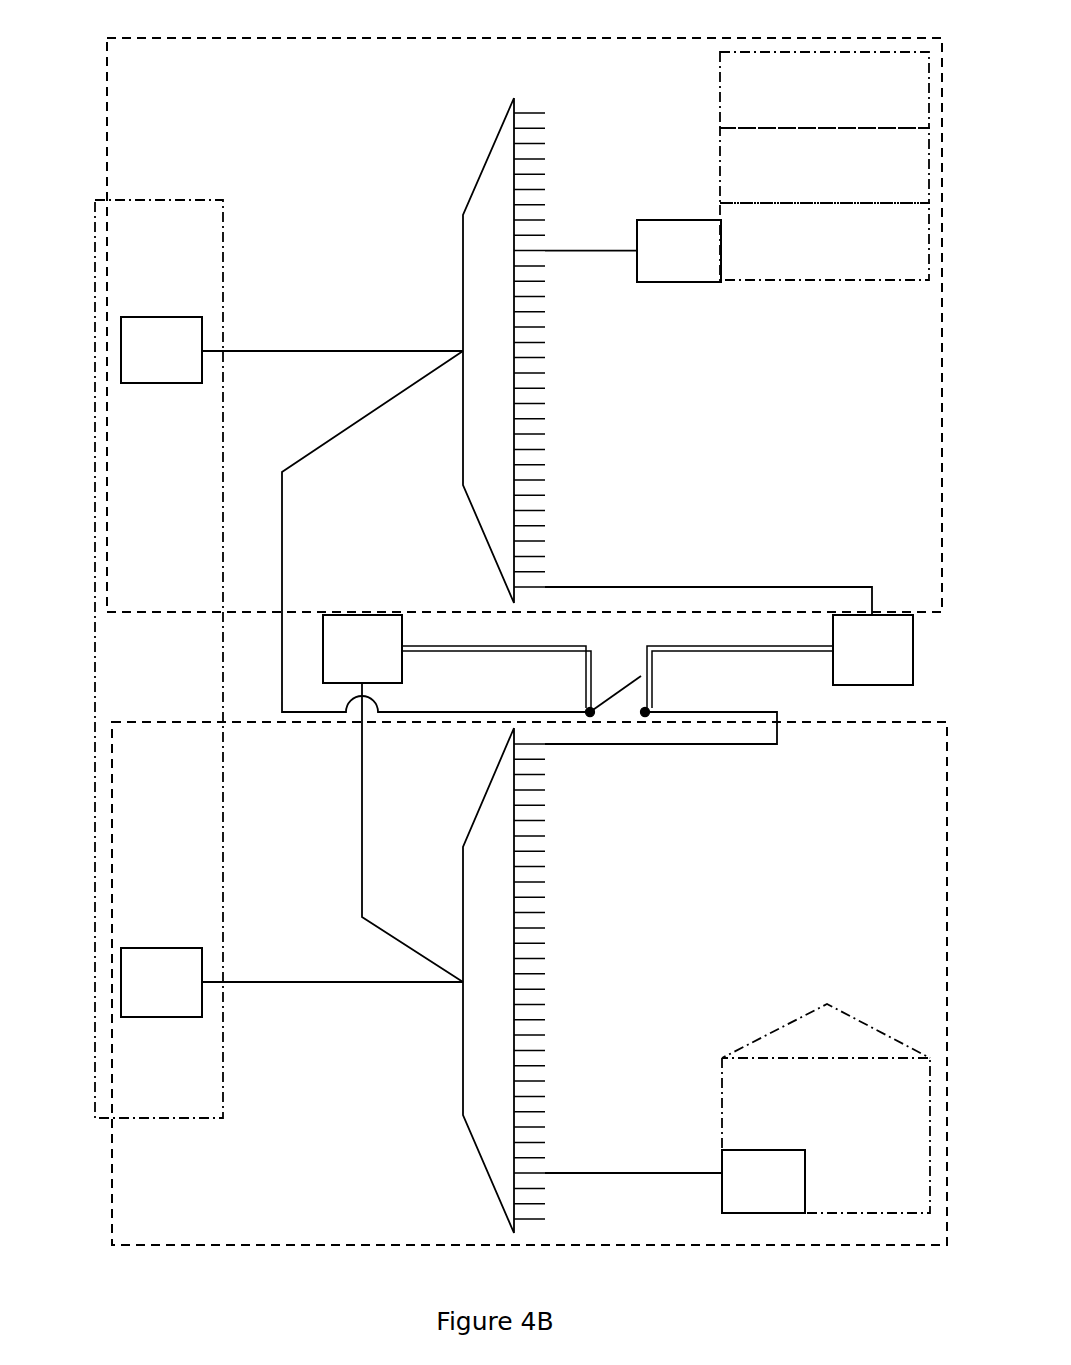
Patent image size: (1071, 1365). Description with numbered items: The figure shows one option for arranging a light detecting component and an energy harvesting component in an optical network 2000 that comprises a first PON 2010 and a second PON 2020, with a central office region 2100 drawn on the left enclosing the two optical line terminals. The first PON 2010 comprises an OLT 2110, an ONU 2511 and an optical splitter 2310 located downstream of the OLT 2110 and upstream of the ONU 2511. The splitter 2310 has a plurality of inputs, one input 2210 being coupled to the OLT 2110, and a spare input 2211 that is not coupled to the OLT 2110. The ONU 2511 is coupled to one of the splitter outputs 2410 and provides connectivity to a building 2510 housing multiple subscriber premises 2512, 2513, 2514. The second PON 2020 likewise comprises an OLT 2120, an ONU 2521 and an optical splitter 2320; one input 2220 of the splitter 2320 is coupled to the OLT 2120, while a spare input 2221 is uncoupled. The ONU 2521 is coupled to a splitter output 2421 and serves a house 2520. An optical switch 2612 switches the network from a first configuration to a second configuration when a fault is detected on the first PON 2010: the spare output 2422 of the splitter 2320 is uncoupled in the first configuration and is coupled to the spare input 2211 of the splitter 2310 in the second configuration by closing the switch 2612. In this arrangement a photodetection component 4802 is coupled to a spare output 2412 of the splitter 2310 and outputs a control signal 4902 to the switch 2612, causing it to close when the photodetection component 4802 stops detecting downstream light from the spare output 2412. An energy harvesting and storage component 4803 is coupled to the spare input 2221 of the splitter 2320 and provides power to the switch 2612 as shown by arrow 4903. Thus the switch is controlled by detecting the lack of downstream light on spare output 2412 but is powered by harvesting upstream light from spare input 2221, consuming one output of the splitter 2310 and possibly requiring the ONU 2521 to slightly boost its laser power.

The optical network 2000 is at (80, 70).
The first PON 2010 is at (524, 325).
The second PON 2020 is at (529, 983).
The central office 2100 is at (159, 659).
The OLT 2110 is at (161, 350).
The OLT 2120 is at (161, 982).
The input 2210 is at (326, 348).
The spare input 2211 is at (424, 382).
The input 2220 is at (326, 980).
The spare input 2221 is at (383, 924).
The optical splitter 2310 is at (504, 350).
The optical splitter 2320 is at (504, 980).
The splitter output 2410 is at (578, 256).
The spare output 2412 is at (541, 584).
The splitter output 2421 is at (617, 1178).
The spare output 2422 is at (570, 749).
The building 2510 is at (716, 84).
The ONU 2511 is at (679, 251).
The subscriber premises 2512 is at (824, 90).
The subscriber premises 2513 is at (824, 165).
The subscriber premises 2514 is at (824, 241).
The house 2520 is at (826, 1108).
The ONU 2521 is at (763, 1181).
The optical switch 2612 is at (621, 684).
The photodetection component 4802 is at (873, 650).
The energy harvesting and storage component 4803 is at (362, 649).
The control signal 4902 is at (786, 656).
The arrow 4903 is at (433, 656).